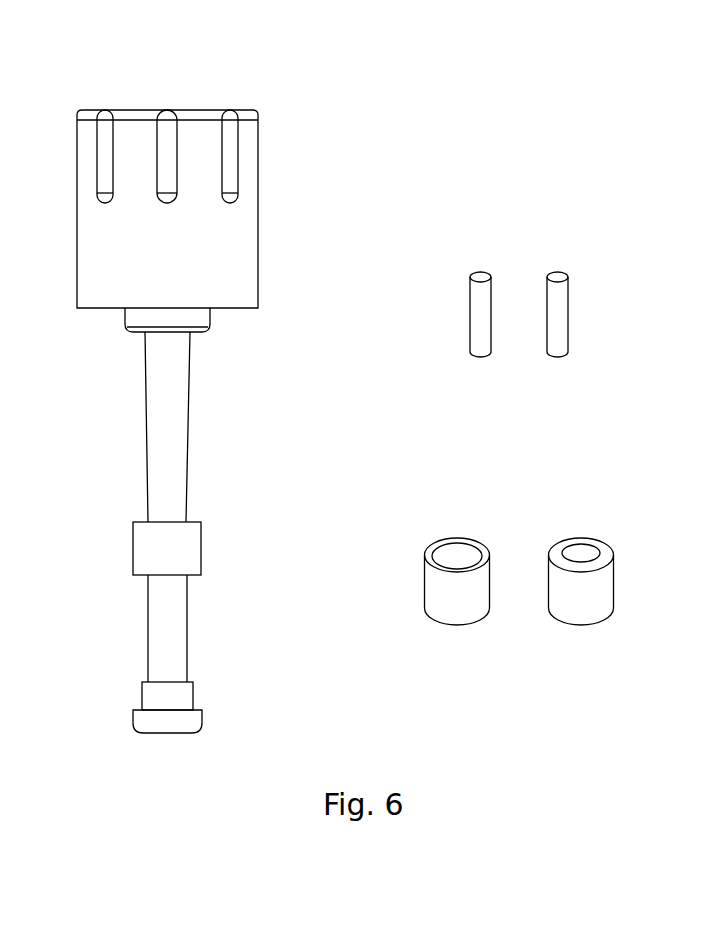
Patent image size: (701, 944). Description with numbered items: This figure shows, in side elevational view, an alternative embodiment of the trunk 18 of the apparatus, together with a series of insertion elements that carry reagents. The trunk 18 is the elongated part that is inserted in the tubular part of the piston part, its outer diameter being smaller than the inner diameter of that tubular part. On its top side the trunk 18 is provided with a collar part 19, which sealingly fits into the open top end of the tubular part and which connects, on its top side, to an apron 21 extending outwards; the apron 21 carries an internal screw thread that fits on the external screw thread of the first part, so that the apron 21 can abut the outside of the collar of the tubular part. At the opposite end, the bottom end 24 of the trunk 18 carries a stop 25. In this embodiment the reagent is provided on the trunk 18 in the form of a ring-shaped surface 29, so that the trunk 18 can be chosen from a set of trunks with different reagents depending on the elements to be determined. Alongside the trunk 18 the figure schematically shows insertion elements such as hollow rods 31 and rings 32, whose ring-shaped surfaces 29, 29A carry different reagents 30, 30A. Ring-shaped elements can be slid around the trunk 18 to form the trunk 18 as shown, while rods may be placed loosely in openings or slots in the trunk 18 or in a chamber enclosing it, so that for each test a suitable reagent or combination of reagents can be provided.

The trunk 18 is at (191, 410).
The collar part 19 is at (197, 108).
The apron 21 is at (237, 253).
The bottom end of the trunk 24 is at (120, 711).
The stop 25 is at (193, 697).
The ring-shaped surface 29 is at (183, 547).
The ring-shaped surface 29A is at (559, 320).
The reagent 30 is at (123, 549).
The reagent 30A is at (580, 363).
The rods 31 is at (478, 637).
The rings 32 is at (548, 257).